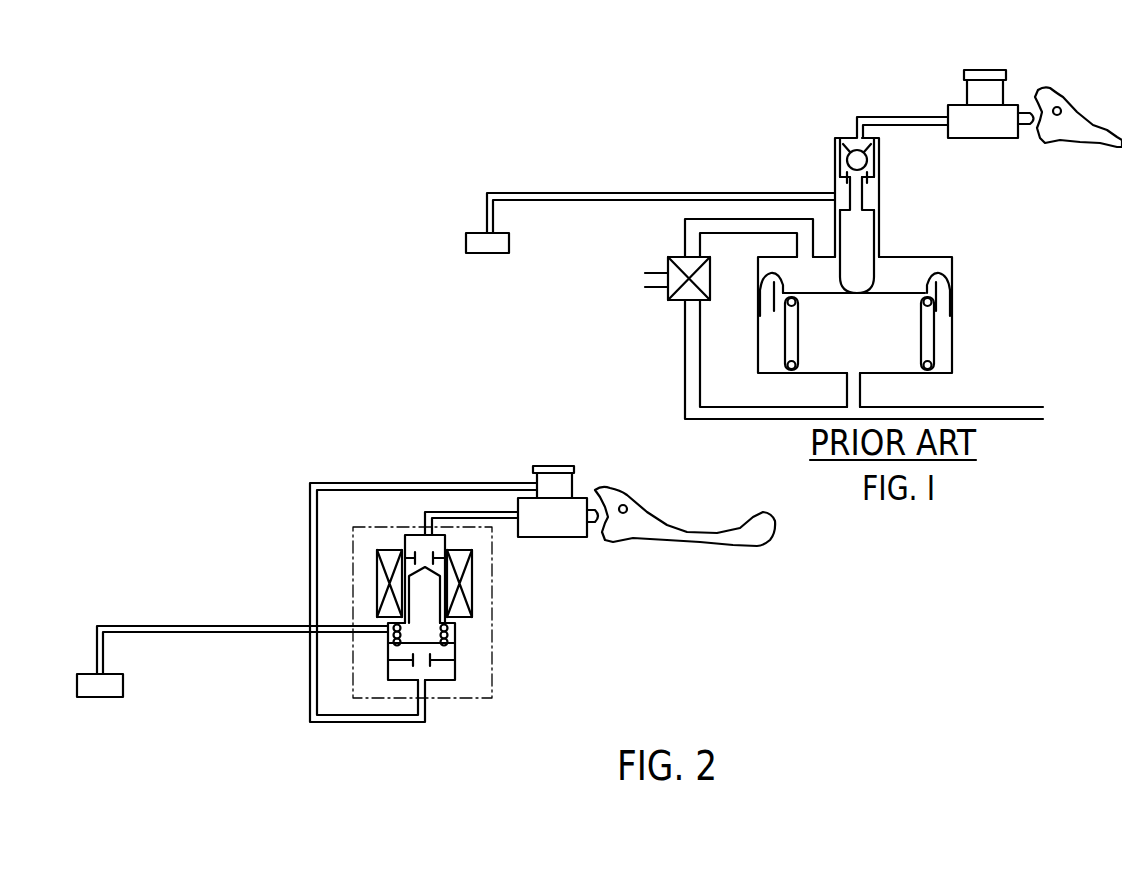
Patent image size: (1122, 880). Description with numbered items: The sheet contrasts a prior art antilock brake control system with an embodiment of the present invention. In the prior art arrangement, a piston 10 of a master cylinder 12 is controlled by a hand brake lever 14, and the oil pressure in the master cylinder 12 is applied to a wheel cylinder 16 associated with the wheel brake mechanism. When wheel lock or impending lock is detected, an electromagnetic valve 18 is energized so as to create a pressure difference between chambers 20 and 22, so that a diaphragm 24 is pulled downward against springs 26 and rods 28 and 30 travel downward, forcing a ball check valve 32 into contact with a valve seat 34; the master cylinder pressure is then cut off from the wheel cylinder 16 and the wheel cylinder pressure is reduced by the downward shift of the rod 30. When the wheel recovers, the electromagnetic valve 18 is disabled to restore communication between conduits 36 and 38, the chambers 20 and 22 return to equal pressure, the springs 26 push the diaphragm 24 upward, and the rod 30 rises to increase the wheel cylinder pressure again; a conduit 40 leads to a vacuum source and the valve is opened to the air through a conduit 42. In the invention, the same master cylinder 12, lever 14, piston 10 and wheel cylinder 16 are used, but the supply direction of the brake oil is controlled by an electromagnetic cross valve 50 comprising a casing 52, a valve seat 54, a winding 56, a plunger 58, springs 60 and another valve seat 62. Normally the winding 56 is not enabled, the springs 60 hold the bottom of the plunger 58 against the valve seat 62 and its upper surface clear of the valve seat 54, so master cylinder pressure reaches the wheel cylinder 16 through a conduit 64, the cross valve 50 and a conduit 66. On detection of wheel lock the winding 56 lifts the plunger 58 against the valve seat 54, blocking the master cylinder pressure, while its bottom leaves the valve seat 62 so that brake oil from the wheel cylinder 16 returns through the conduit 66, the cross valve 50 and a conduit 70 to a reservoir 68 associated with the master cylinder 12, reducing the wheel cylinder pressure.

In FIG. 1, the piston 10 is at (1031, 98).
In FIG. 2, the piston 10 is at (596, 512).
In FIG. 1, the master cylinder 12 is at (999, 134).
In FIG. 2, the master cylinder 12 is at (558, 527).
In FIG. 1, the hand brake lever 14 is at (1100, 135).
In FIG. 2, the hand brake lever 14 is at (666, 530).
In FIG. 1, the wheel cylinder 16 is at (483, 248).
In FIG. 2, the wheel cylinder 16 is at (100, 689).
In FIG. 1, the electromagnetic valve 18 is at (680, 286).
In FIG. 1, the chamber 20 is at (940, 268).
In FIG. 1, the chamber 22 is at (898, 360).
In FIG. 1, the diaphragm 24 is at (875, 295).
In FIG. 1, the springs 26 is at (927, 338).
In FIG. 1, the rod 28 is at (857, 203).
In FIG. 1, the rod 30 is at (860, 248).
In FIG. 1, the ball check valve 32 is at (846, 158).
In FIG. 1, the valve seat 34 is at (846, 177).
In FIG. 1, the conduit 36 is at (696, 231).
In FIG. 1, the conduit 38 is at (688, 377).
In FIG. 1, the conduit 40 is at (1036, 415).
In FIG. 1, the conduit 42 is at (645, 279).
In FIG. 2, the electromagnetic cross valve 50 is at (523, 692).
In FIG. 2, the casing 52 is at (403, 538).
In FIG. 2, the valve seat 54 is at (417, 548).
In FIG. 2, the winding 56 is at (466, 584).
In FIG. 2, the plunger 58 is at (428, 613).
In FIG. 2, the springs 60 is at (449, 640).
In FIG. 2, the valve seat 62 is at (432, 665).
In FIG. 2, the conduit 64 is at (453, 516).
In FIG. 2, the conduit 66 is at (203, 633).
In FIG. 2, the reservoir 68 is at (556, 487).
In FIG. 2, the conduit 70 is at (327, 724).